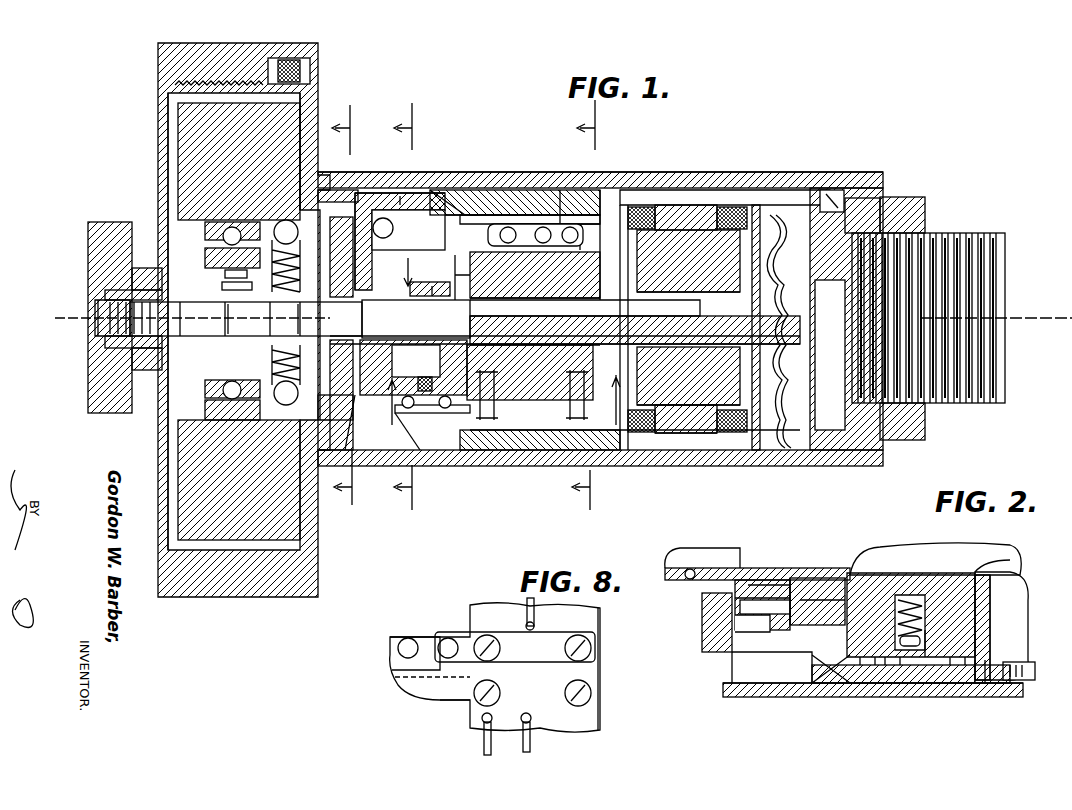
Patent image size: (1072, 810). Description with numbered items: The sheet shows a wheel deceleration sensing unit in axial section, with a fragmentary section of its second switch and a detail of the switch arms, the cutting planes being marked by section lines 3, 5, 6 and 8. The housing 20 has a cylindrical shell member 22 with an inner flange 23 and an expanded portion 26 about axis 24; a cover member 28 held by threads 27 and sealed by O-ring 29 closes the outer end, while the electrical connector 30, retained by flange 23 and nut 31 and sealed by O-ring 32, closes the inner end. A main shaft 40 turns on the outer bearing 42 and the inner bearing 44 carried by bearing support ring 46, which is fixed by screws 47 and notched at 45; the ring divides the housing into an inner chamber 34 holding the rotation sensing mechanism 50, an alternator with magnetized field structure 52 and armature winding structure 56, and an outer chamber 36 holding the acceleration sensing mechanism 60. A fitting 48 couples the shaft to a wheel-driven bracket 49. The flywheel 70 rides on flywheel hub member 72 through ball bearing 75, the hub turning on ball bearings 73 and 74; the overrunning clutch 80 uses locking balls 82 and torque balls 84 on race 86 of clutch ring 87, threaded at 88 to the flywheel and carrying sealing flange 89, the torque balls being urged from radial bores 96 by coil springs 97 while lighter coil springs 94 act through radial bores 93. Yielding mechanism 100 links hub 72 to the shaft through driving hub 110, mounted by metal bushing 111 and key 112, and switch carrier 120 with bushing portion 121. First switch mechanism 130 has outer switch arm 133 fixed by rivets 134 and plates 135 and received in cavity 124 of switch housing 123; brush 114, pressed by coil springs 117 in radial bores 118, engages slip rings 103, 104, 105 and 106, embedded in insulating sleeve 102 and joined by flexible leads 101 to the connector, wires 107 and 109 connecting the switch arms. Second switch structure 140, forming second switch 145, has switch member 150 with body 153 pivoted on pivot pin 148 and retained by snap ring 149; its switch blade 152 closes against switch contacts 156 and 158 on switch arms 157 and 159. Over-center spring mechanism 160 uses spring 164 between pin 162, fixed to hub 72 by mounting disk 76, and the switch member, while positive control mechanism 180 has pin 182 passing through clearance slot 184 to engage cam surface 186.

In FIG. 1, the housing 20 is at (693, 162).
In FIG. 2, the housing 20 is at (768, 710).
In FIG. 1, the cylindrical shell member 22 is at (645, 172).
In FIG. 2, the cylindrical shell member 22 is at (790, 697).
In FIG. 1, the radially inner flange 23 is at (846, 196).
In FIG. 1, the cylindrical axis 24 is at (1030, 318).
In FIG. 1, the radially expanded portion 26 is at (300, 78).
In FIG. 1, the threads 27 is at (235, 82).
In FIG. 1, the cover member 28 is at (165, 232).
In FIG. 1, the O-ring 29 is at (292, 60).
In FIG. 1, the electrical connector 30 is at (985, 233).
In FIG. 1, the nut 31 is at (923, 215).
In FIG. 1, the O-ring 32 is at (870, 205).
In FIG. 1, the inner chamber 34 is at (820, 190).
In FIG. 1, the outer chamber 36 is at (360, 193).
In FIG. 1, the main shaft 40 is at (386, 326).
In FIG. 2, the main shaft 40 is at (875, 555).
In FIG. 1, the outer bearing 42 is at (175, 392).
In FIG. 1, the inner bearing 44 is at (628, 290).
In FIG. 1, the notch 45 is at (580, 450).
In FIG. 1, the bearing support ring 46 is at (625, 390).
In FIG. 2, the bearing support ring 46 is at (1005, 605).
In FIG. 1, the screws 47 is at (712, 190).
In FIG. 2, the screws 47 is at (1035, 672).
In FIG. 1, the fitting 48 is at (148, 270).
In FIG. 1, the bracket 49 is at (88, 395).
In FIG. 1, the rotation sensing mechanism 50 is at (778, 214).
In FIG. 1, the permanently magnetized field structure 52 is at (688, 435).
In FIG. 1, the armature winding structure 56 is at (754, 205).
In FIG. 1, the acceleration sensing mechanism 60 is at (490, 195).
In FIG. 1, the flywheel 70 is at (285, 128).
In FIG. 1, the flywheel hub member 72 is at (228, 318).
In FIG. 1, the ball bearing 73 is at (230, 304).
In FIG. 1, the ball bearing 74 is at (330, 302).
In FIG. 2, the ball bearing 74 is at (692, 568).
In FIG. 1, the ball bearing 75 is at (232, 222).
In FIG. 1, the mounting disk 76 is at (350, 405).
In FIG. 2, the mounting disk 76 is at (712, 652).
In FIG. 1, the overrunning clutch 80 is at (340, 190).
In FIG. 1, the locking balls 82 is at (335, 218).
In FIG. 1, the torque balls 84 is at (290, 430).
In FIG. 1, the race 86 is at (278, 225).
In FIG. 1, the clutch ring 87 is at (284, 220).
In FIG. 1, the threads 88 is at (236, 226).
In FIG. 1, the radial sealing flange 89 is at (372, 195).
In FIG. 1, the radial bores 93 is at (240, 288).
In FIG. 1, the coil springs 94 is at (225, 298).
In FIG. 1, the radial bores 96 is at (296, 382).
In FIG. 1, the coil springs 97 is at (292, 383).
In FIG. 1, the yielding mechanism 100 is at (364, 460).
In FIG. 2, the yielding mechanism 100 is at (978, 572).
In FIG. 1, the flexible leads 101 is at (605, 450).
In FIG. 2, the flexible leads 101 is at (982, 684).
In FIG. 1, the inner sleeve 102 is at (520, 218).
In FIG. 2, the inner sleeve 102 is at (835, 683).
In FIG. 1, the slip ring 103 is at (535, 222).
In FIG. 2, the slip ring 103 is at (870, 668).
In FIG. 1, the slip ring 104 is at (465, 240).
In FIG. 2, the slip ring 104 is at (893, 668).
In FIG. 1, the slip ring 105 is at (562, 192).
In FIG. 1, the slip ring 106 is at (588, 190).
In FIG. 8, the slip ring 106 is at (536, 604).
In FIG. 2, the slip ring 106 is at (958, 668).
In FIG. 8, the wire 107 is at (532, 745).
In FIG. 8, the wire 109 is at (482, 740).
In FIG. 1, the driving hub 110 is at (572, 272).
In FIG. 8, the driving hub 110 is at (606, 727).
In FIG. 2, the driving hub 110 is at (992, 640).
In FIG. 1, the metal bushing 111 is at (530, 368).
In FIG. 1, the key 112 is at (498, 340).
In FIG. 2, the brush 114 is at (912, 650).
In FIG. 2, the coil springs 117 is at (912, 598).
In FIG. 2, the radial bores 118 is at (927, 660).
In FIG. 1, the switch carrier 120 is at (426, 195).
In FIG. 2, the switch carrier 120 is at (752, 630).
In FIG. 1, the bushing portion 121 is at (438, 279).
In FIG. 1, the switch housing 123 is at (405, 187).
In FIG. 1, the cavity 124 is at (408, 230).
In FIG. 1, the first switch mechanism 130 is at (470, 215).
In FIG. 1, the outer switch arm 133 is at (450, 200).
In FIG. 1, the rivets 134 is at (471, 274).
In FIG. 1, the plates 135 is at (516, 248).
In FIG. 1, the second switch structure 140 is at (402, 450).
In FIG. 8, the second switch structure 140 is at (390, 716).
In FIG. 1, the second switch 145 is at (398, 405).
In FIG. 2, the pivot pin 148 is at (858, 580).
In FIG. 2, the snap ring 149 is at (800, 620).
In FIG. 2, the switch member 150 is at (765, 628).
In FIG. 1, the switch blade 152 is at (406, 380).
In FIG. 8, the switch blade 152 is at (392, 658).
In FIG. 2, the body 153 is at (782, 616).
In FIG. 1, the switch contact 156 is at (448, 410).
In FIG. 8, the switch contact 156 is at (448, 638).
In FIG. 8, the switch arm 157 is at (482, 632).
In FIG. 1, the switch contact 158 is at (410, 410).
In FIG. 8, the switch contact 158 is at (408, 638).
In FIG. 8, the switch arm 159 is at (455, 702).
In FIG. 1, the over-center spring mechanism 160 is at (413, 267).
In FIG. 1, the pin 162 is at (465, 340).
In FIG. 1, the spring 164 is at (441, 282).
In FIG. 2, the positive control mechanism 180 is at (762, 588).
In FIG. 2, the pin 182 is at (745, 595).
In FIG. 2, the clearance slot 184 is at (792, 590).
In FIG. 2, the cam surface 186 is at (812, 605).
In FIG. 1, the section line 3- 3 is at (410, 314).
In FIG. 1, the section line 5- 5 is at (586, 312).
In FIG. 1, the section line 6- 6 is at (349, 314).
In FIG. 1, the section line 8- 8 is at (505, 409).